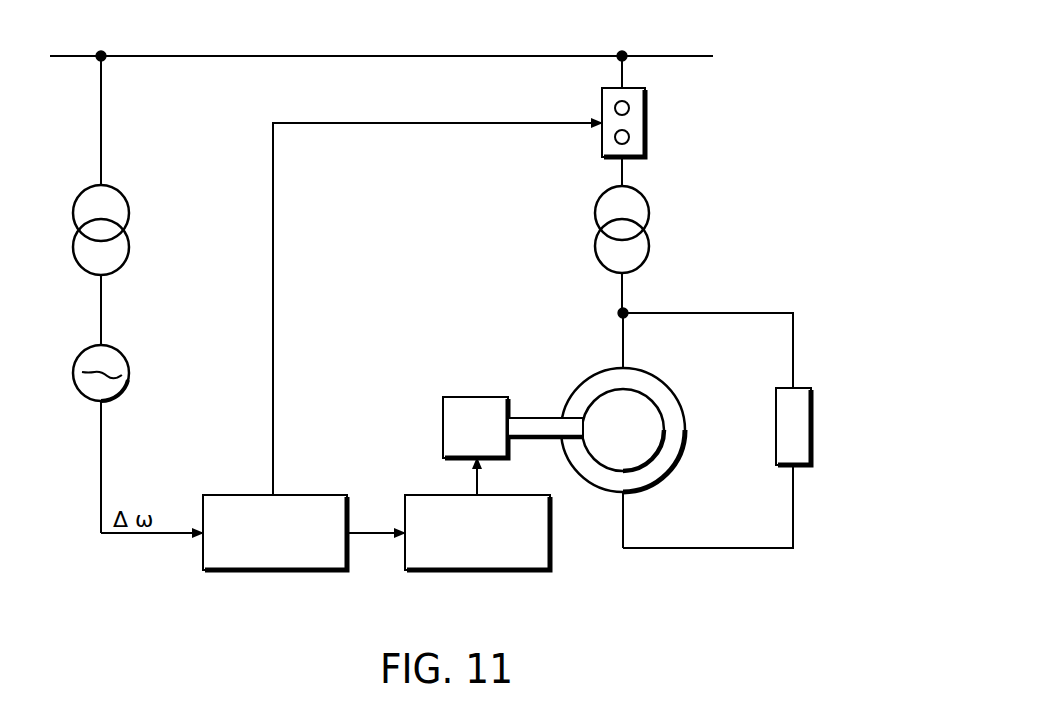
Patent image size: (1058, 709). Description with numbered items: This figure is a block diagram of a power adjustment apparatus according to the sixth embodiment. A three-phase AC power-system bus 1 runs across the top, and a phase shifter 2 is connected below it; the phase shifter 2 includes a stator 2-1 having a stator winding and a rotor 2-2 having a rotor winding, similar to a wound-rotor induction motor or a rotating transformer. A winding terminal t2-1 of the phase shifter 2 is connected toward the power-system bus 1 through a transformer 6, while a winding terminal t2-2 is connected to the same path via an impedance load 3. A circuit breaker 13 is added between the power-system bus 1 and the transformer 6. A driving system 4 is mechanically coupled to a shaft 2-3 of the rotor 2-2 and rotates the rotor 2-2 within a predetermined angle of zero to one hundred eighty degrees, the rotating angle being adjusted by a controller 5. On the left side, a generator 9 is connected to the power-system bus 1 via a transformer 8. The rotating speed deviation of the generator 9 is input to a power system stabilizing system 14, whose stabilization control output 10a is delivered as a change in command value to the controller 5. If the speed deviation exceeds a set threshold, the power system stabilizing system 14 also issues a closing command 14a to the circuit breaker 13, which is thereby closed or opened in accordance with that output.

The power-system bus 1 is at (660, 56).
The phase shifter 2 is at (656, 429).
The stator 2-1 is at (668, 388).
The rotor 2-2 is at (642, 447).
The shaft 2-3 is at (538, 418).
The impedance load 3 is at (811, 425).
The driving system 4 is at (465, 397).
The controller 5 is at (550, 537).
The transformer 6 is at (650, 218).
The transformer 8 is at (129, 217).
The generator 9 is at (129, 378).
The stabilization control output 10a is at (370, 545).
The circuit breaker 13 is at (645, 124).
The power system stabilizing system 14 is at (329, 495).
The closing command 14a is at (273, 280).
The winding terminal t2-1 is at (623, 343).
The winding terminal t2-2 is at (625, 472).